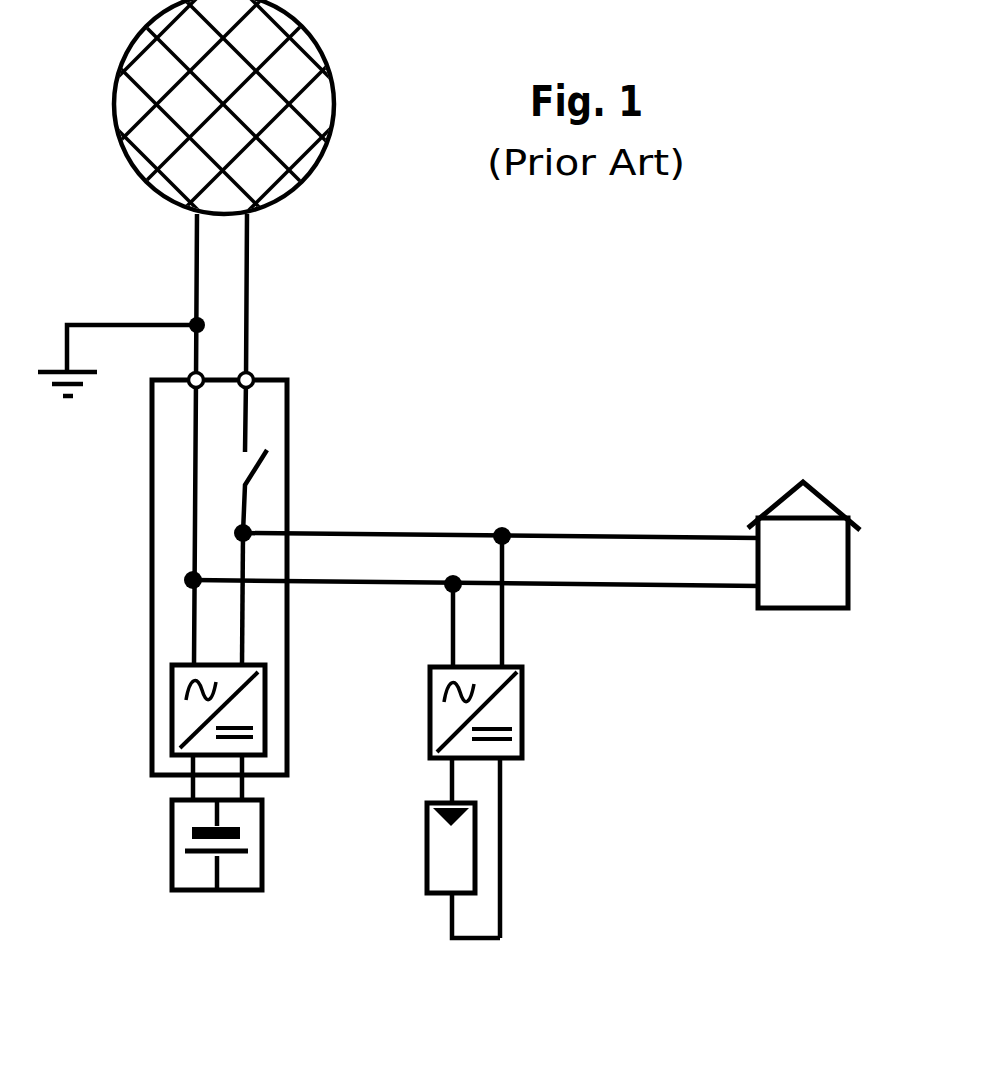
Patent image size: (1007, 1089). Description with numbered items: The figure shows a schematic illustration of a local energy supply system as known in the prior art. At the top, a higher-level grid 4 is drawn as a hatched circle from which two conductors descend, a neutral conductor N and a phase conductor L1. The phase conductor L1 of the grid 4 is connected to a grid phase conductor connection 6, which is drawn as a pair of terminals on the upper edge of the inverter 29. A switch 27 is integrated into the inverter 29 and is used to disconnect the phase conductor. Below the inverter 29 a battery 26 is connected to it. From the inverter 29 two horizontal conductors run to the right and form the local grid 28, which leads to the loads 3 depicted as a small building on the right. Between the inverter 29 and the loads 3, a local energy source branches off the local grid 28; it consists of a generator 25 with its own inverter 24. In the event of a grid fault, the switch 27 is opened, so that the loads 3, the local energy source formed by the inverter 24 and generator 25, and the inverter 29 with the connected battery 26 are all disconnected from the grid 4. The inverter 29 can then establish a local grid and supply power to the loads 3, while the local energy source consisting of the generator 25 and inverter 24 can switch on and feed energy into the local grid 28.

The loads 3 is at (860, 567).
The higher-level grid 4 is at (333, 62).
The grid phase conductor connection 6 is at (253, 370).
The inverter 24 is at (527, 707).
The generator 25 is at (478, 840).
The battery 26 is at (267, 837).
The switch 27 is at (268, 465).
The local grid 28 is at (502, 422).
The inverter 29 is at (293, 622).
The neutral conductor N is at (190, 283).
The phase conductor L1 is at (252, 285).